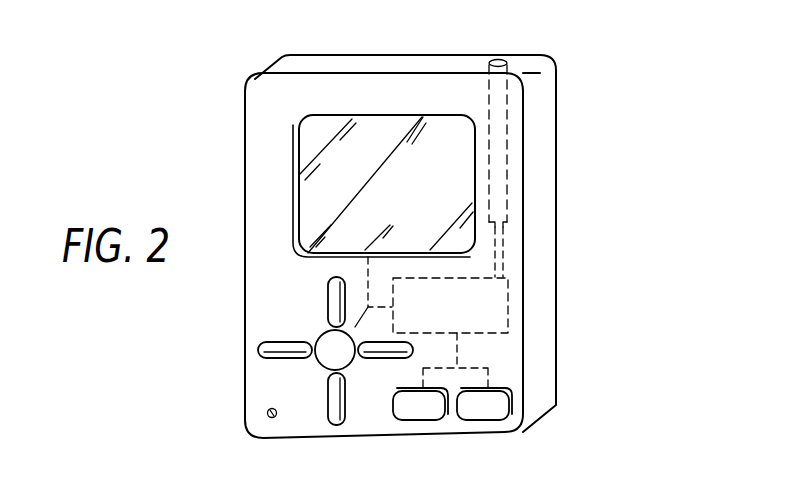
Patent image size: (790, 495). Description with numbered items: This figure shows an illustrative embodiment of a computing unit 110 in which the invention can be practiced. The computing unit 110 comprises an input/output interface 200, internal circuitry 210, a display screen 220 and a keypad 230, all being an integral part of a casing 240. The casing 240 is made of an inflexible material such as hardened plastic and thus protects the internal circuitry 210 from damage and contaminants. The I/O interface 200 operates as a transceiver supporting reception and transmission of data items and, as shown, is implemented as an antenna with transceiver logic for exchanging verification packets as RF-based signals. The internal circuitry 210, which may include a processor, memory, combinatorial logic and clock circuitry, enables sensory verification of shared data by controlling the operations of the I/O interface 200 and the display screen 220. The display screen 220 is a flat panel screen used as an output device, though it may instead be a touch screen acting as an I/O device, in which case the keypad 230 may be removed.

The computing unit 110 is at (216, 144).
The input/output (I/O) interface 200 is at (507, 168).
The internal circuitry 210 is at (495, 335).
The display screen 220 is at (320, 193).
The keypad 230 is at (288, 383).
The casing 240 is at (542, 290).